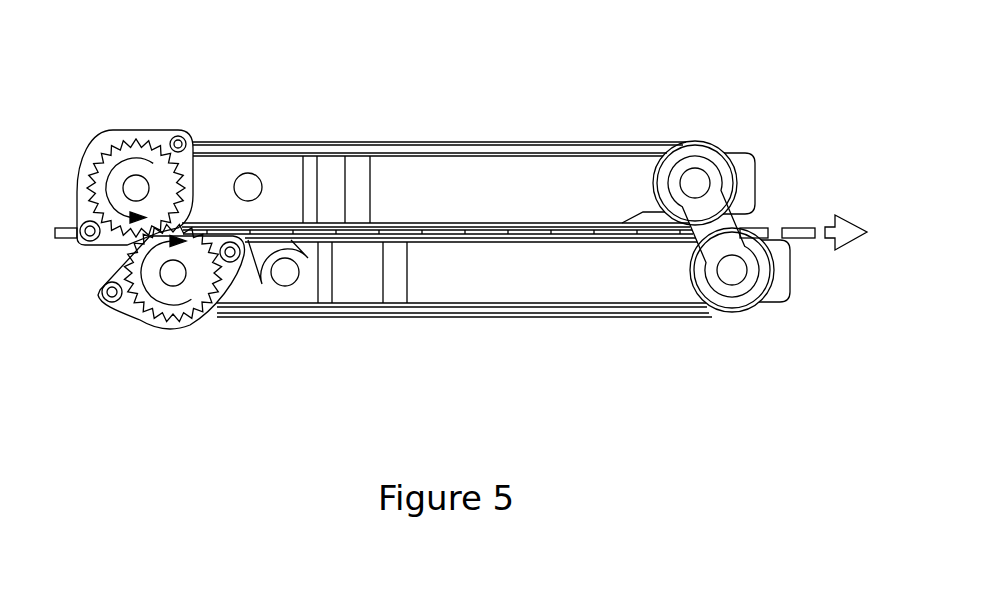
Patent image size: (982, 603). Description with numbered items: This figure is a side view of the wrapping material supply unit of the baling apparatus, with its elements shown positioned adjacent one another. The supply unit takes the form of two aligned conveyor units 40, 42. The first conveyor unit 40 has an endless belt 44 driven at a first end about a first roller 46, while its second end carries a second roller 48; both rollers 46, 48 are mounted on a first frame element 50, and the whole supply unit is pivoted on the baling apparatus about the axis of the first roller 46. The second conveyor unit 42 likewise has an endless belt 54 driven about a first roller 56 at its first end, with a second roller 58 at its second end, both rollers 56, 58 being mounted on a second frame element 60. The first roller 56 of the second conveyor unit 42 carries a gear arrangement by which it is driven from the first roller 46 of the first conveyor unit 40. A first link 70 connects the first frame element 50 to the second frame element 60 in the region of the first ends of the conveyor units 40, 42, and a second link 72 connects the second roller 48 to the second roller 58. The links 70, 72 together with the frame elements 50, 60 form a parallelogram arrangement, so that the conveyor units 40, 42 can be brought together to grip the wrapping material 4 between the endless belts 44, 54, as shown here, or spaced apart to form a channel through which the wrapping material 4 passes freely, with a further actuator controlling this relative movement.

The wrapping material 4 is at (793, 231).
The first conveyor unit 40 is at (436, 132).
The second conveyor unit 42 is at (464, 333).
The endless belt 44 is at (598, 153).
The first roller 46 is at (137, 186).
The second roller 48 is at (692, 183).
The first frame element 50 is at (466, 183).
The endless belt 54 is at (612, 318).
The first roller 56 is at (178, 280).
The second roller 58 is at (738, 271).
The second frame element 60 is at (523, 283).
The first link 70 is at (286, 274).
The second link 72 is at (717, 243).